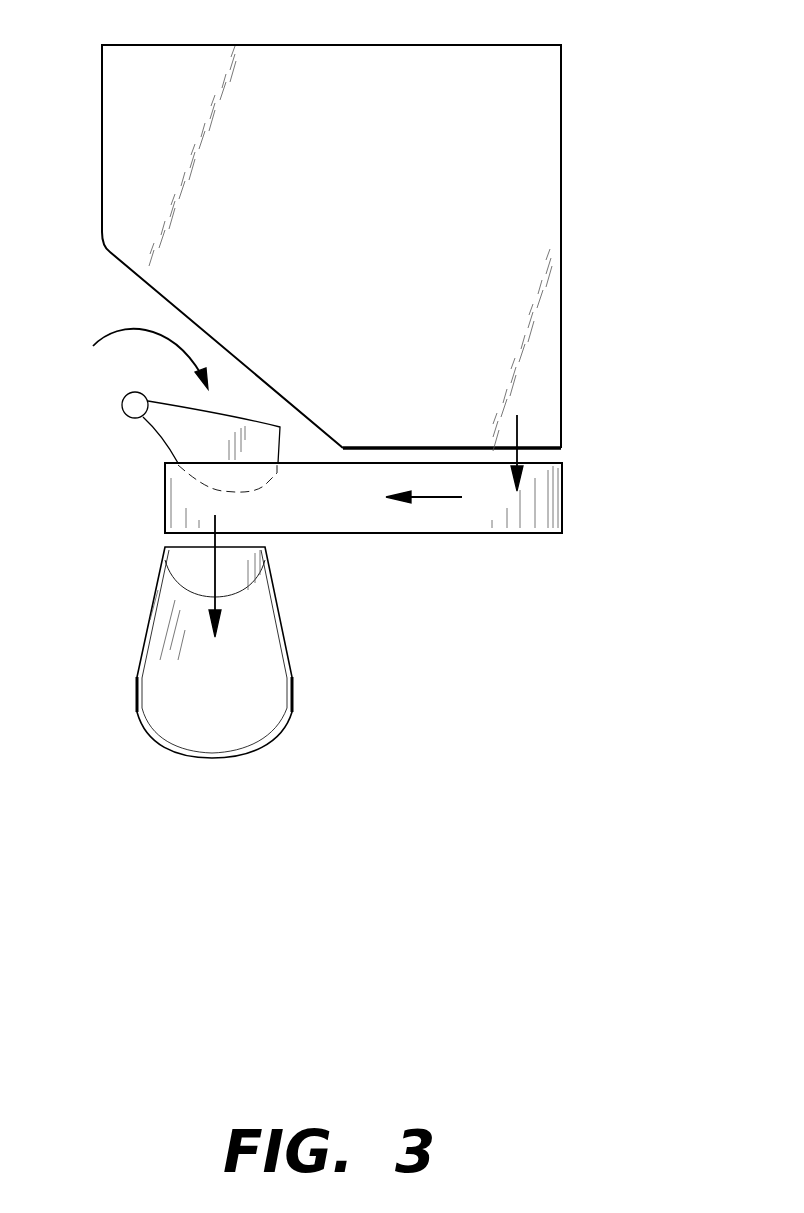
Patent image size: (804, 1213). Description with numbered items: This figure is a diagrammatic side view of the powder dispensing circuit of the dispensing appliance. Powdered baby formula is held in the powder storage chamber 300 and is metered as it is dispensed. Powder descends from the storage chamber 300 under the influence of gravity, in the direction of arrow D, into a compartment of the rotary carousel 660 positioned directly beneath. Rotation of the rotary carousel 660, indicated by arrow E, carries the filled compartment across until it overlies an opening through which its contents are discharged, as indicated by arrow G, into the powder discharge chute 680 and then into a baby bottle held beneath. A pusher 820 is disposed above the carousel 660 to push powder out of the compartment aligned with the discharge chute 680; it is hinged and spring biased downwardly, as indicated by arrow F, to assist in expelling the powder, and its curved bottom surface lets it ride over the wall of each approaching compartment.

The powder storage chamber 300 is at (562, 58).
The rotary carousel 660 is at (562, 480).
The powder discharge chute 680 is at (283, 612).
The pusher 820 is at (153, 442).
The arrow F is at (187, 347).
The arrow D is at (517, 427).
The arrow E is at (447, 497).
The arrow G is at (213, 562).